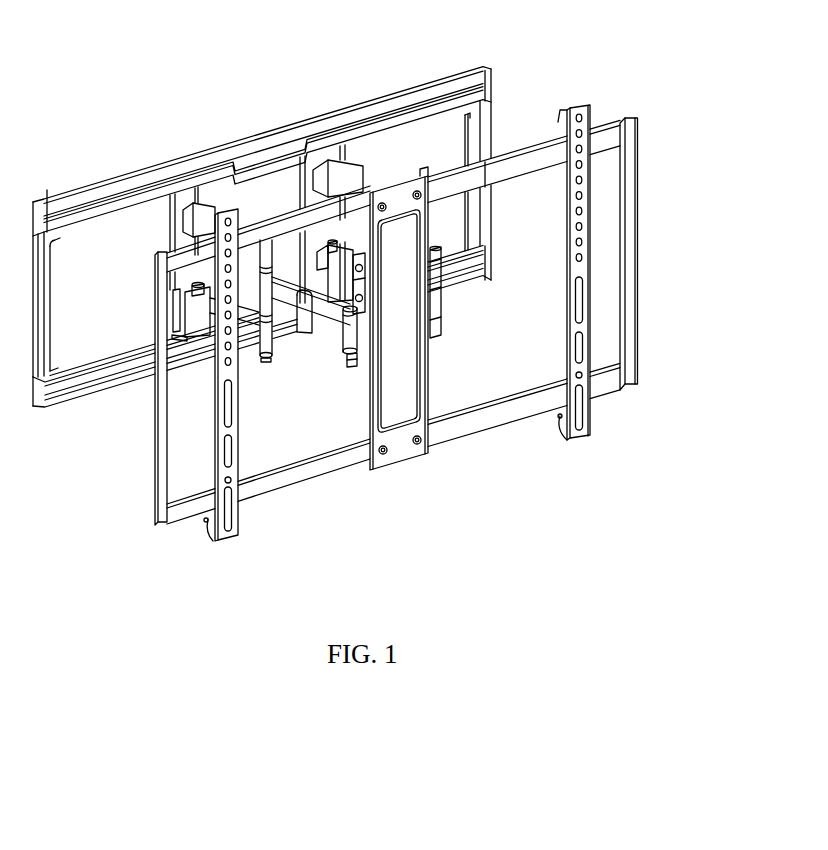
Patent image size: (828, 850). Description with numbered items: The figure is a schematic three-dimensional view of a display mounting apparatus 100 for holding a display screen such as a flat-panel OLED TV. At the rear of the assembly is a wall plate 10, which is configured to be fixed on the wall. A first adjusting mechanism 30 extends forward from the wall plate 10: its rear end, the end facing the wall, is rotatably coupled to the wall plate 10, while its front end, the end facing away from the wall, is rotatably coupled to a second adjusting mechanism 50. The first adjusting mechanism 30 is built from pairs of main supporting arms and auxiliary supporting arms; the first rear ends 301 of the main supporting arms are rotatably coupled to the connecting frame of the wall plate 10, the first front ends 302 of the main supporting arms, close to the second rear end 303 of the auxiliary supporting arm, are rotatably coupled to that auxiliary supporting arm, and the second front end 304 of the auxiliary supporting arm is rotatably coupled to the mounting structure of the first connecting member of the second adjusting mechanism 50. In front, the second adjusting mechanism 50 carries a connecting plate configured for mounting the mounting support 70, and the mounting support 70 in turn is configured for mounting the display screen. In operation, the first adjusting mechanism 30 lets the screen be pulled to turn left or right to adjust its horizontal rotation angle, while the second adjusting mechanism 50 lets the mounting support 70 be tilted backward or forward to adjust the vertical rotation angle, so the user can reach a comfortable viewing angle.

The display mounting apparatus 100 is at (219, 78).
The wall plate 10 is at (405, 99).
The first rear end 301 is at (187, 213).
The first adjusting mechanism 30 is at (208, 318).
The first front end 302 is at (267, 346).
The second rear end 303 is at (264, 289).
The second front end 304 is at (355, 366).
The second adjusting mechanism 50 is at (397, 443).
The mounting support 70 is at (630, 192).